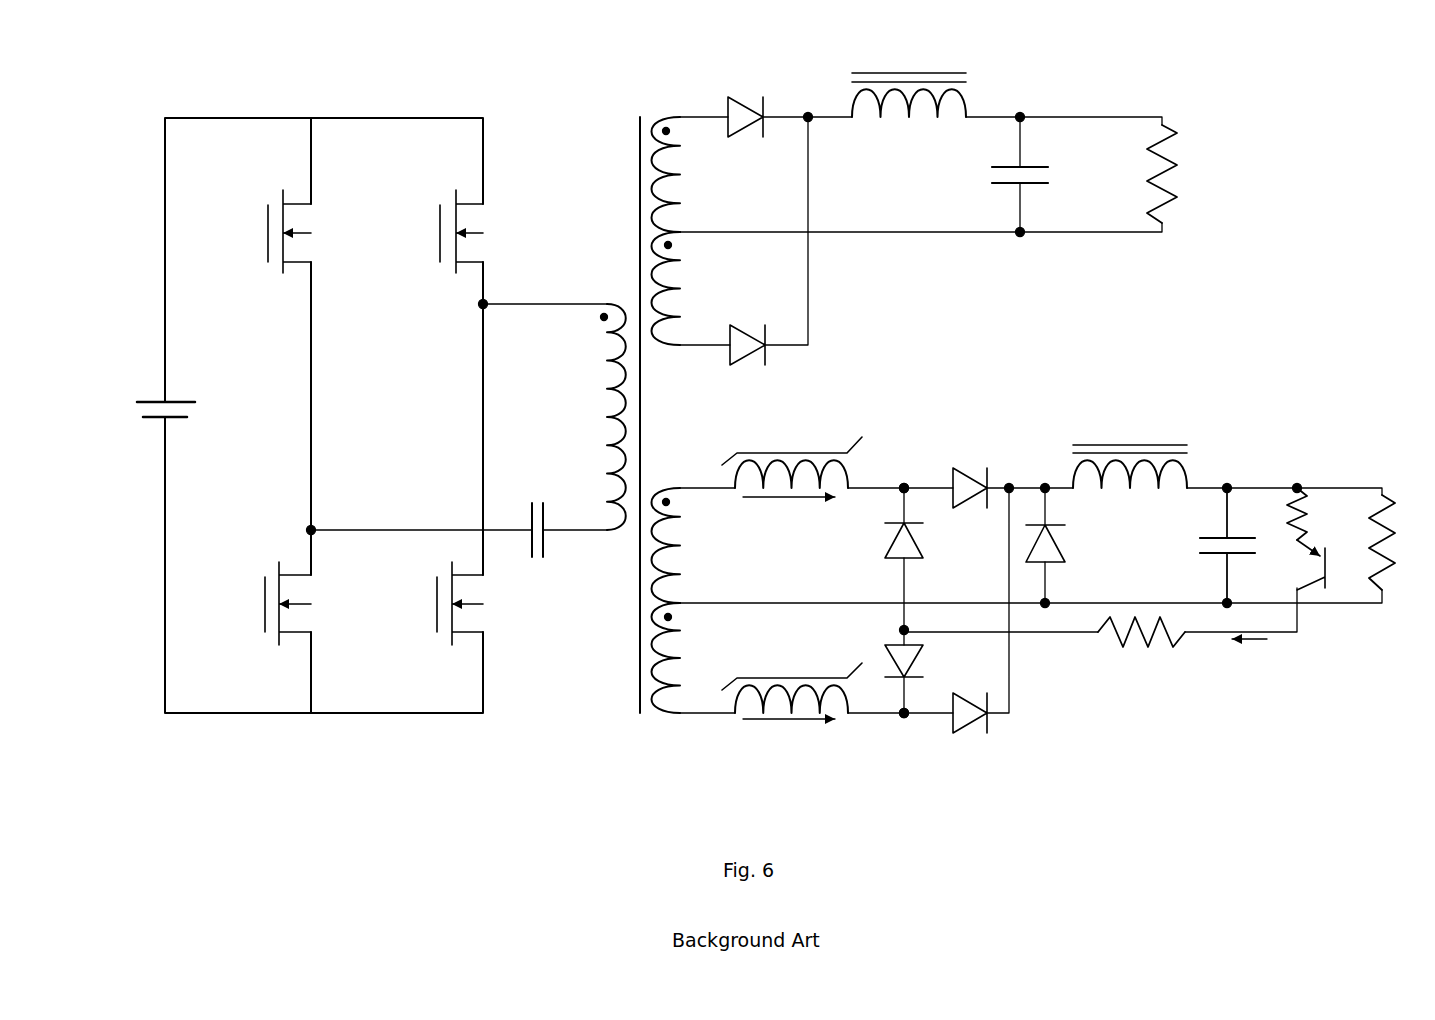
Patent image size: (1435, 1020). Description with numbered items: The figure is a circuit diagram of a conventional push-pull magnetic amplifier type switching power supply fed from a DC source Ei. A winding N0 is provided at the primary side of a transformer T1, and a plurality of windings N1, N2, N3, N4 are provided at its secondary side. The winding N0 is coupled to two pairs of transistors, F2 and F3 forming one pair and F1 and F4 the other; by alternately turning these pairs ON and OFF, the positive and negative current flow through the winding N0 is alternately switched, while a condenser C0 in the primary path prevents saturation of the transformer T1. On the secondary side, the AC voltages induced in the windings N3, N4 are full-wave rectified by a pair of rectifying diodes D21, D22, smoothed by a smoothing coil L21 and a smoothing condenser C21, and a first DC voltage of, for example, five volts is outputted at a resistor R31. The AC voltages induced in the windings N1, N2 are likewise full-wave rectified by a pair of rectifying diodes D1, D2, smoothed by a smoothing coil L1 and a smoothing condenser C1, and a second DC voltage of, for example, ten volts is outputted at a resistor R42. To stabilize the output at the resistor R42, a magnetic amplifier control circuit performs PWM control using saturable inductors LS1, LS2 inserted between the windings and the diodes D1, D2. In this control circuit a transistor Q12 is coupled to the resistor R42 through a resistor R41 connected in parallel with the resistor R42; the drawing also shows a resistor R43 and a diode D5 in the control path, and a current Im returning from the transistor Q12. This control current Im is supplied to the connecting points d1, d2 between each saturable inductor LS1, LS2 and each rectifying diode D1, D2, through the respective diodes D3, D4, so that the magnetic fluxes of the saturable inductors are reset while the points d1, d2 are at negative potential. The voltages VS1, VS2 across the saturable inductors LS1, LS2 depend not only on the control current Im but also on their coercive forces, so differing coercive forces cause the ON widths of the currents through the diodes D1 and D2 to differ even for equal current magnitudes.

The DC input power source Ei is at (198, 372).
The transistor F1 is at (268, 235).
The transistor F2 is at (265, 606).
The transistor F3 is at (440, 235).
The transistor F4 is at (437, 606).
The condenser C0 is at (545, 552).
The winding N0 is at (593, 417).
The transformer T1 is at (636, 402).
The winding N1 is at (682, 545).
The winding N2 is at (682, 658).
The winding N3 is at (683, 174).
The winding N4 is at (683, 288).
The rectifying diode D21 is at (745, 95).
The rectifying diode D22 is at (748, 366).
The smoothing coil L21 is at (893, 73).
The smoothing condenser C21 is at (1001, 166).
The resistor R31 is at (1177, 165).
The saturable inductor LS1 is at (770, 453).
The saturable inductor LS2 is at (768, 678).
The voltage VS1 is at (789, 515).
The voltage VS2 is at (789, 737).
The connecting point d1 is at (905, 478).
The connecting point d2 is at (905, 728).
The rectifying diode D1 is at (968, 468).
The rectifying diode D2 is at (968, 734).
The diode D3 is at (922, 540).
The diode D4 is at (922, 657).
The diode D5 is at (1060, 535).
The smoothing coil L1 is at (1120, 445).
The smoothing condenser C1 is at (1204, 537).
The resistor R41 is at (1289, 521).
The resistor R42 is at (1371, 543).
The transistor Q12 is at (1314, 568).
The resistor R43 is at (1160, 650).
The control current Im is at (1249, 654).